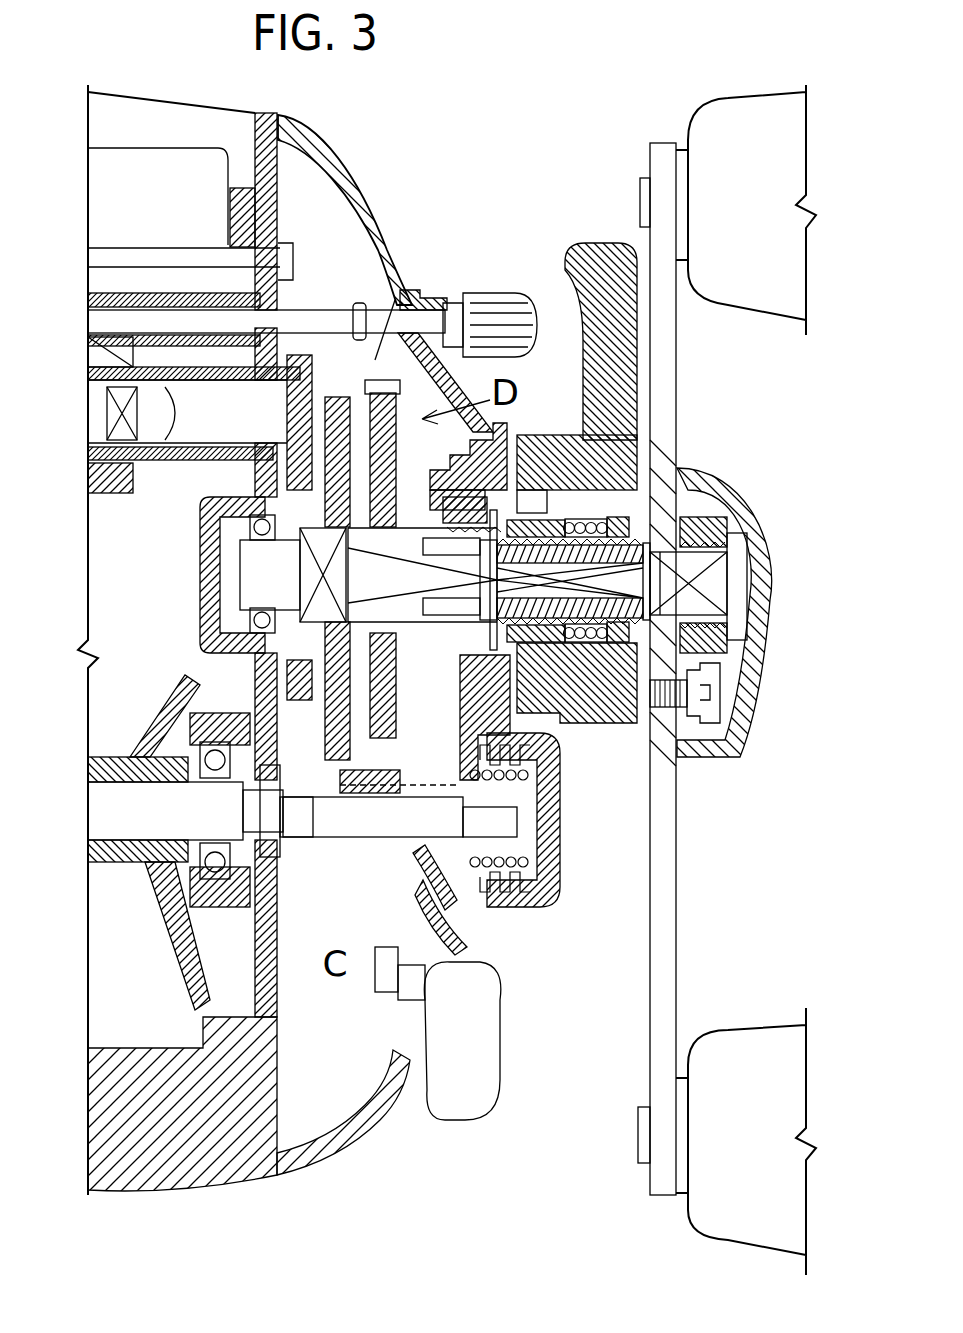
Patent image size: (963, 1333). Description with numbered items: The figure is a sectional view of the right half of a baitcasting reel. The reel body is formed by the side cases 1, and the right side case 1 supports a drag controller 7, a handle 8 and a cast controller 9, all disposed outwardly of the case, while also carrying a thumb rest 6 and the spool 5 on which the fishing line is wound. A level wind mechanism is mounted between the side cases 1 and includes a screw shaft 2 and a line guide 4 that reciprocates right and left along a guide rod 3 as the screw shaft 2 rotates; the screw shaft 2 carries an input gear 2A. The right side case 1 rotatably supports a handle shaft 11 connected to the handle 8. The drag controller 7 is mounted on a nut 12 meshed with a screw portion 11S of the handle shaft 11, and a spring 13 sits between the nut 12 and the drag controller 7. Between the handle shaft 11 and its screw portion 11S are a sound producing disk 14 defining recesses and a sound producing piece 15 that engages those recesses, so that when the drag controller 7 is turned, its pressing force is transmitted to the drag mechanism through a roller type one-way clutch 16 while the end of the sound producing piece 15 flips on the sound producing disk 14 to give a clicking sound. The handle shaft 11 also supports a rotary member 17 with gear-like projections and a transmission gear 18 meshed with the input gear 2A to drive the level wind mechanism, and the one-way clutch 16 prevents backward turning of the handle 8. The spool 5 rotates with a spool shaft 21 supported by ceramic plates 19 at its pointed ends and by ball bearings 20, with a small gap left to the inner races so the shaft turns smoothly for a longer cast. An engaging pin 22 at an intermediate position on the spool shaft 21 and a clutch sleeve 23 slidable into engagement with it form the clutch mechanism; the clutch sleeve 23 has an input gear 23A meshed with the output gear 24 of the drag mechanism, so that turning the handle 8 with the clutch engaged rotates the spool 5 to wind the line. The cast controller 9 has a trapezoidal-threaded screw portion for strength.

The side case 1 is at (335, 152).
The screw shaft 2 is at (190, 455).
The input gear 2A is at (298, 355).
The guide rod 3 is at (180, 293).
The line guide 4 is at (120, 293).
The spool 5 is at (130, 868).
The thumb rest 6 is at (180, 1185).
The drag controller 7 is at (590, 243).
The handle 8 is at (665, 373).
The cast controller 9 is at (553, 890).
The handle shaft 11 is at (713, 577).
The screw portion 11S is at (715, 720).
The nut 12 is at (545, 650).
The spring 13 is at (618, 645).
The sound producing disk 14 is at (700, 470).
The sound producing piece 15 is at (572, 480).
The roller type one-way clutch 16 is at (462, 680).
The rotary member 17 is at (337, 397).
The transmission gear 18 is at (300, 700).
The ceramic plate 19 is at (545, 822).
The ball bearing 20 is at (218, 907).
The spool shaft 21 is at (122, 790).
The engaging pin 22 is at (382, 936).
The clutch sleeve 23 is at (315, 850).
The input gear 23A is at (460, 920).
The output gear 24 is at (385, 318).